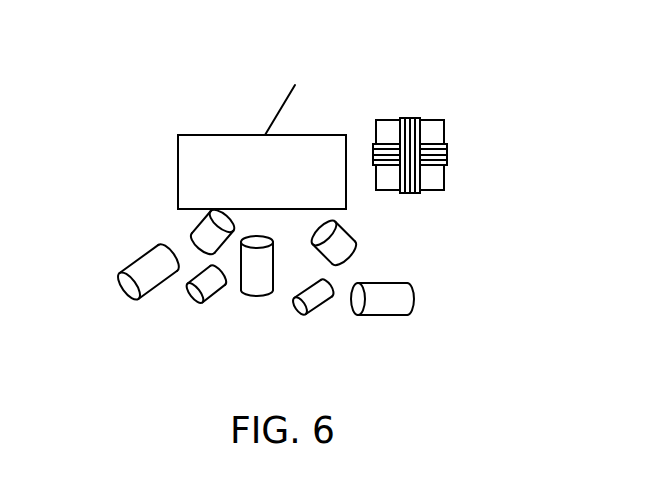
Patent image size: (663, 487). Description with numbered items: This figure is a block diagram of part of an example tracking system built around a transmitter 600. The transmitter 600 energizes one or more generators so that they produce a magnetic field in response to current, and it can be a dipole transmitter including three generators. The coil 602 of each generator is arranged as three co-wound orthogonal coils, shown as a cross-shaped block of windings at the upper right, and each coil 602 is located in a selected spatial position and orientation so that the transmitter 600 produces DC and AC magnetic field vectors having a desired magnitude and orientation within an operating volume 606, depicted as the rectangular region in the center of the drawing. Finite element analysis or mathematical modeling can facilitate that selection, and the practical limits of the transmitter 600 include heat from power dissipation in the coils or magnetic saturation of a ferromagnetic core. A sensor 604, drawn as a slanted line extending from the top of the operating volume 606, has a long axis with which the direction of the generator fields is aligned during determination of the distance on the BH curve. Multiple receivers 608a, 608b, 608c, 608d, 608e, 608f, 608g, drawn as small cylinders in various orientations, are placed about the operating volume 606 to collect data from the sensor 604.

The transmitter 600 is at (465, 127).
The coil 602 is at (407, 118).
The sensor 604 is at (277, 113).
The operating volume 606 is at (198, 172).
The receiver 608a is at (199, 223).
The receiver 608b is at (130, 287).
The receiver 608c is at (194, 294).
The receiver 608d is at (257, 292).
The receiver 608e is at (294, 308).
The receiver 608f is at (383, 315).
The receiver 608g is at (350, 233).